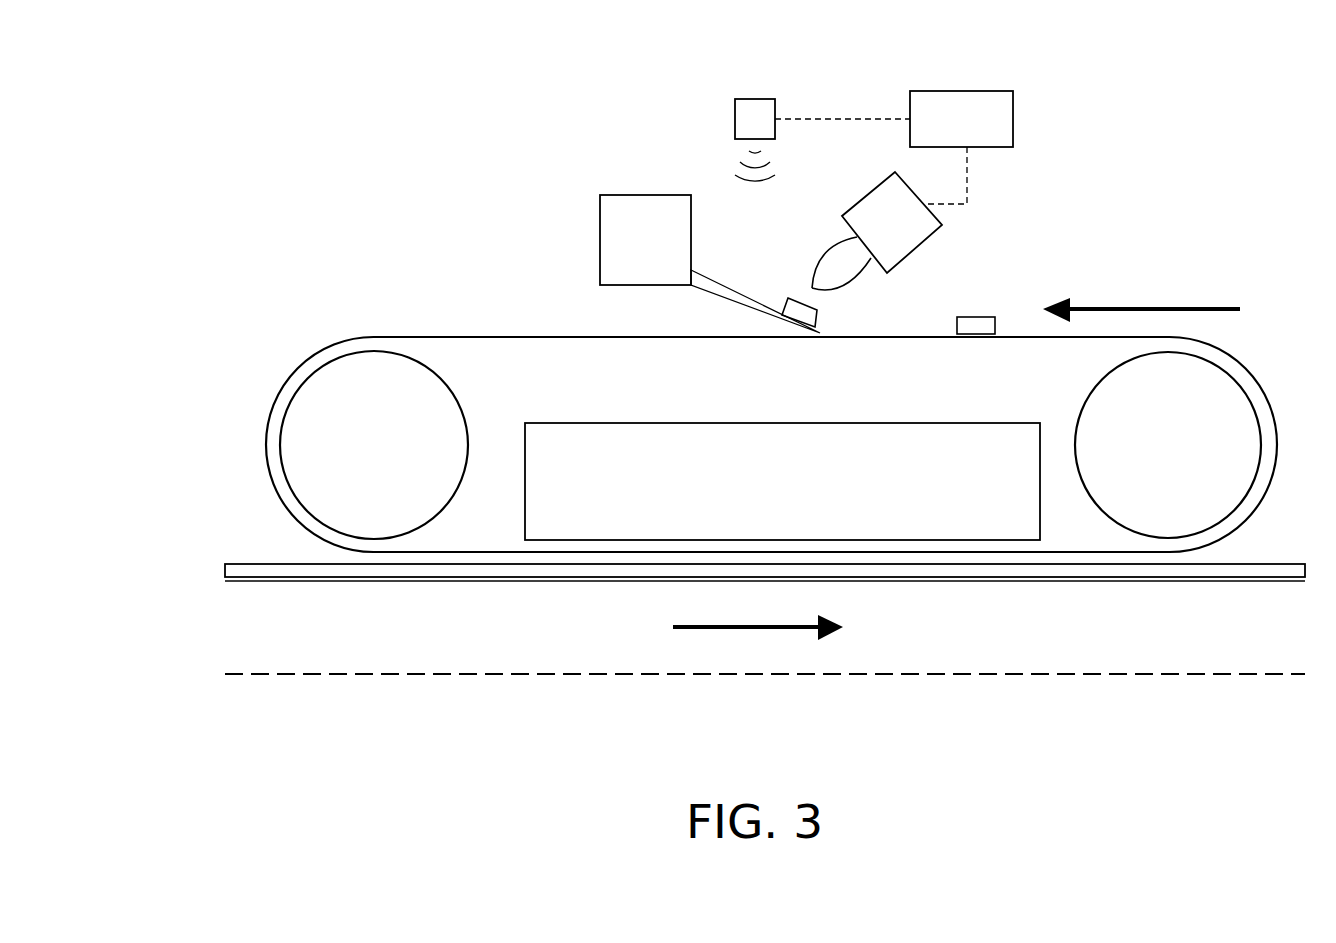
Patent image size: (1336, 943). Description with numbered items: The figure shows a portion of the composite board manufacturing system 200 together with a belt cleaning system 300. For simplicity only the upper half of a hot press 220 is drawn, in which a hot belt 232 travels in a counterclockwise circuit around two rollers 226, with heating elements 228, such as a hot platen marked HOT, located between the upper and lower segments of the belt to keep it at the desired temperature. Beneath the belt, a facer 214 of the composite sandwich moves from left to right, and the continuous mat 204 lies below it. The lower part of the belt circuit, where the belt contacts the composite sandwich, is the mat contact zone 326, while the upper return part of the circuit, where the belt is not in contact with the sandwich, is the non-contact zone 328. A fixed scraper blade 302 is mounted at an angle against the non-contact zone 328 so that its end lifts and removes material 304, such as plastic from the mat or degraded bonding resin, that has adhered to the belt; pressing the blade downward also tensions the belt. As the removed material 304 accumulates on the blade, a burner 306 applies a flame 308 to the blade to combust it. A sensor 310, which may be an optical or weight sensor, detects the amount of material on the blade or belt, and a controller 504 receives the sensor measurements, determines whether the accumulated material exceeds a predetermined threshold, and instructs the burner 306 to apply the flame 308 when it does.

The composite board manufacturing system 200 is at (296, 66).
The belt cleaning system 300 is at (548, 104).
The hot press 220 is at (360, 285).
The hot belt 232 is at (298, 368).
The rollers 226 is at (295, 497).
The heating elements 228 is at (622, 537).
The facer 214 is at (237, 564).
The continuous mat 204 is at (343, 675).
The mat contact zone 326 is at (918, 615).
The non-contact zone 328 is at (1210, 272).
The sensor 310 is at (757, 99).
The controller 504 is at (973, 91).
The burner 306 is at (940, 223).
The flame 308 is at (838, 243).
The fixed scraper blade 302 is at (717, 293).
The material 304 is at (819, 312).